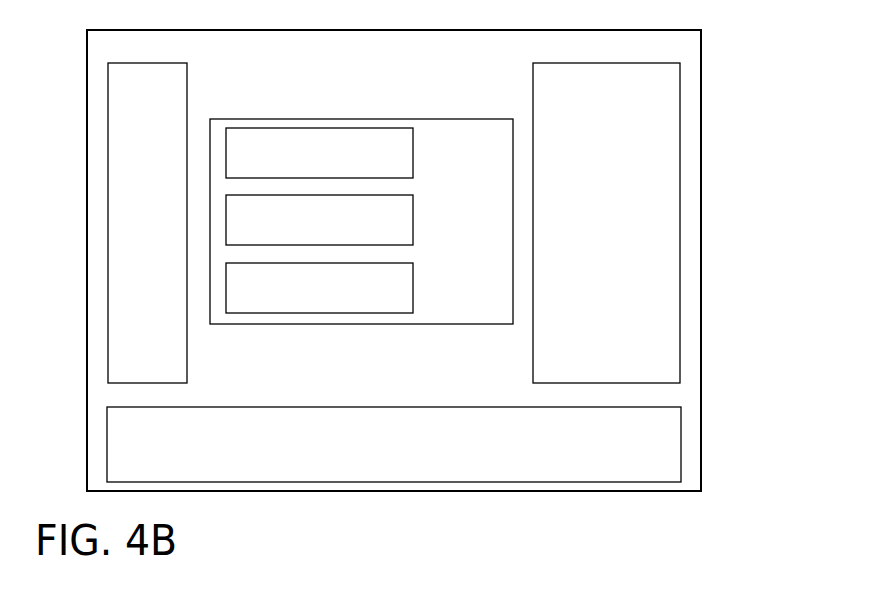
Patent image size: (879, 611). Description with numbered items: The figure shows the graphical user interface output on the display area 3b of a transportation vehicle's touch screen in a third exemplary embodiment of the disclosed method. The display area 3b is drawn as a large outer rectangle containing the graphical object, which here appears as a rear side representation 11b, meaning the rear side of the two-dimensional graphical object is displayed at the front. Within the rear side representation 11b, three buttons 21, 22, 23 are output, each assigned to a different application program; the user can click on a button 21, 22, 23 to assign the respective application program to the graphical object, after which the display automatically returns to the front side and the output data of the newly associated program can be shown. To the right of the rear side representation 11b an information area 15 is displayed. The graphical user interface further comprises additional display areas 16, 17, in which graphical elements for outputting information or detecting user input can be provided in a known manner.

The display area 3b is at (712, 62).
The rear side representation 11b is at (520, 159).
The information area 15 is at (589, 234).
The additional display area 16 is at (130, 237).
The additional display area 17 is at (381, 457).
The button 21 is at (305, 166).
The button 22 is at (305, 232).
The button 23 is at (305, 301).